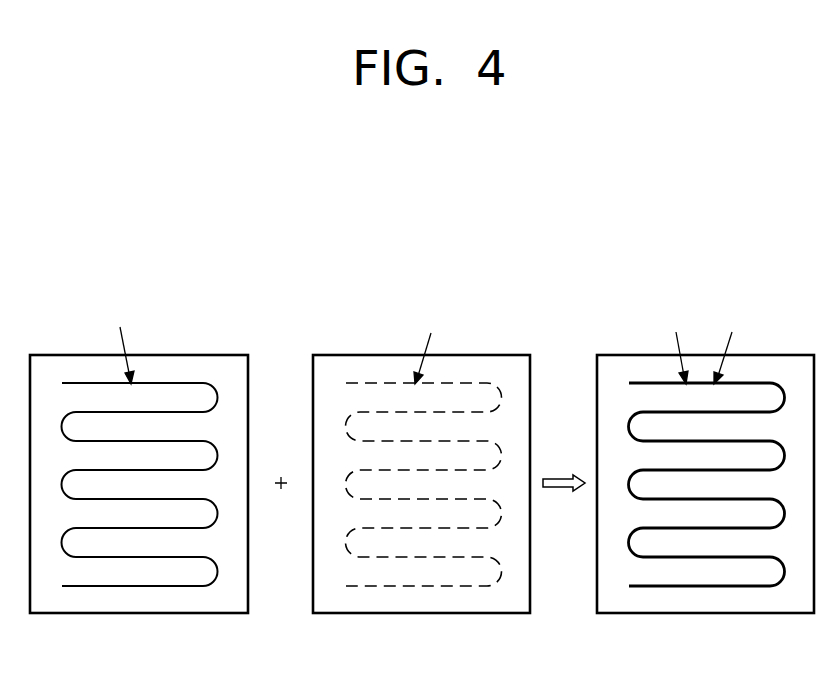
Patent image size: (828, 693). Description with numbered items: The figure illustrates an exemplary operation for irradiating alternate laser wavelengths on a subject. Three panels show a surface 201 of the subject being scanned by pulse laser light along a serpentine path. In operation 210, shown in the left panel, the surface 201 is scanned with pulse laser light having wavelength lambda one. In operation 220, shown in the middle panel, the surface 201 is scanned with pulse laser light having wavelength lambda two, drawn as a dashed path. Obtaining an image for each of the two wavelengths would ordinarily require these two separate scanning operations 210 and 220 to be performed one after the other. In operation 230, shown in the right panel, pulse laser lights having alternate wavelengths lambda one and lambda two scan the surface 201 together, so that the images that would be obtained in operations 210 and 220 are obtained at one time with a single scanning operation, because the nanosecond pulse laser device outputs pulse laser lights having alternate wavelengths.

The surface of the subject 201 is at (202, 354).
The operation of scanning with wavelength λ1 210 is at (140, 479).
The operation of scanning with wavelength λ2 220 is at (424, 481).
The operation of scanning with alternate wavelengths λ1 and λ2 230 is at (707, 482).